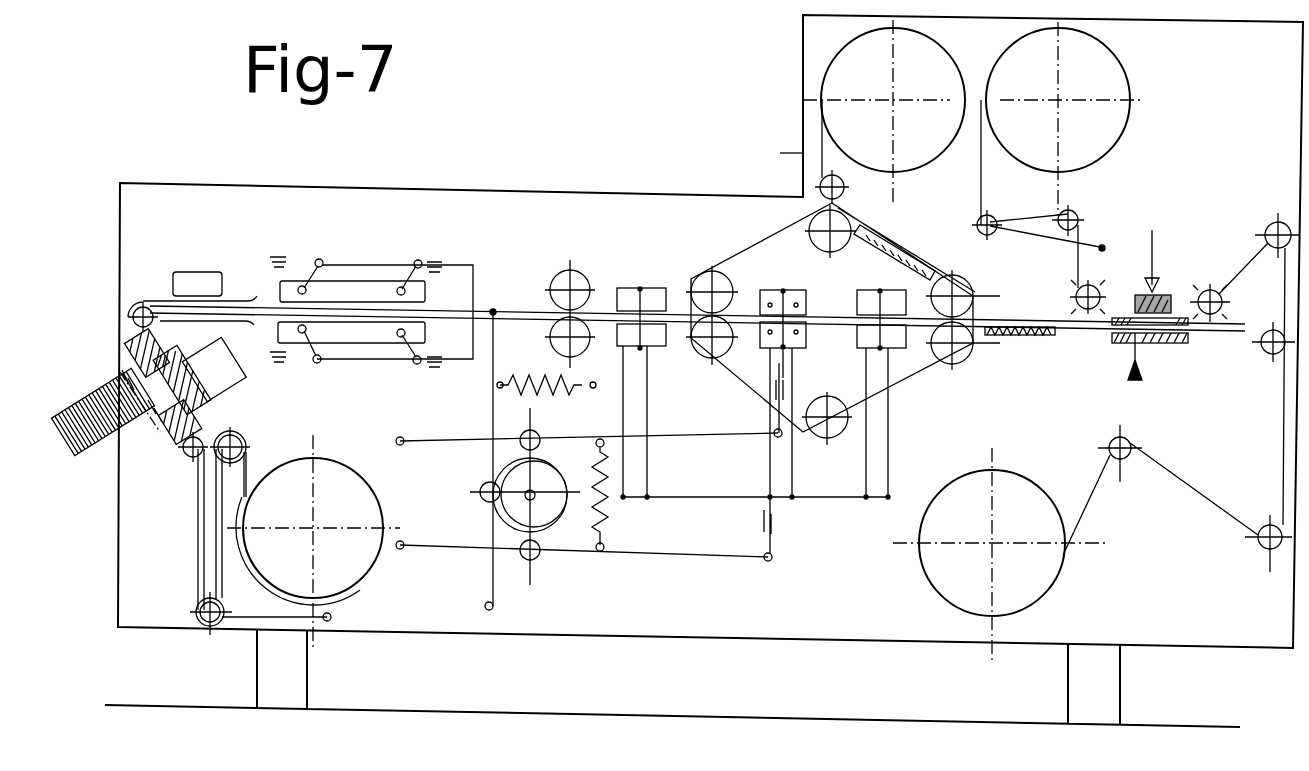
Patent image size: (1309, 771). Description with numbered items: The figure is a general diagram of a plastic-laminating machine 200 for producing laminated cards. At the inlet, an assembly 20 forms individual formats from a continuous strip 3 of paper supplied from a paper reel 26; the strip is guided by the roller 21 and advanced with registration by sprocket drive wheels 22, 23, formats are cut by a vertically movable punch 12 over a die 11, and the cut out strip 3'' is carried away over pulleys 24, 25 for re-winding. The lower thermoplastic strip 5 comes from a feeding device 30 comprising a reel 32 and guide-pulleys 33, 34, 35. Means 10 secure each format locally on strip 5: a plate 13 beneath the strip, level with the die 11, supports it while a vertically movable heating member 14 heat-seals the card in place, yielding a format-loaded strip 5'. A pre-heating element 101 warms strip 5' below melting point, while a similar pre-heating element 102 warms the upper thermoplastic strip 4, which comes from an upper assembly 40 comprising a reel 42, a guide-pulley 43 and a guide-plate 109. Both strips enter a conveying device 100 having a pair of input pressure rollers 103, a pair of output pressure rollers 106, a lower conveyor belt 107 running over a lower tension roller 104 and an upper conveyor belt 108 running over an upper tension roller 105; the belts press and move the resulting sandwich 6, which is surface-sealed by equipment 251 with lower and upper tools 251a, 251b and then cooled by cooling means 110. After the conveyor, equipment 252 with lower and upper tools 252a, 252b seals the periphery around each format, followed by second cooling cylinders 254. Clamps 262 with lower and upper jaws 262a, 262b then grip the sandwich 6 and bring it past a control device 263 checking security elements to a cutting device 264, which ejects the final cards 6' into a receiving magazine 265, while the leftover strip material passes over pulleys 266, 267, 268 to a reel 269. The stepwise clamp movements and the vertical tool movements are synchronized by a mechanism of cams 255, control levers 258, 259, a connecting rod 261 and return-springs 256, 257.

The plastic-laminating machine 200 is at (438, 655).
The sandwich 6 is at (686, 331).
The final cards 6' is at (137, 463).
The reel 42 is at (941, 46).
The paper supply roll 26 is at (1122, 62).
The upper assembly 40 is at (788, 62).
The upper thermoplastic strip 4 is at (780, 152).
The guide-pulley 43 is at (845, 190).
The upper conveyor belt 108 is at (779, 232).
The upper tension roller 105 is at (826, 240).
The output pressure rollers 106 is at (722, 286).
The lower tension roller 104 is at (833, 440).
The guide-plate 109 is at (975, 282).
The input pressure rollers 103 is at (962, 365).
The pre-heating element 102 is at (914, 231).
The conveying device 100 is at (744, 400).
The lower conveyor belt 107 is at (903, 402).
The equipment for sealing the periphery 252 is at (656, 355).
The lower tool 252a is at (662, 350).
The upper tool 252b is at (662, 288).
The cooling means 110 is at (806, 344).
The equipment for sealing the surface 251 is at (891, 374).
The lower tool 251a is at (904, 340).
The upper tool 251b is at (874, 304).
The control lever 258 is at (728, 446).
The control lever 259 is at (712, 558).
The actuating rod 261 is at (493, 420).
The return-spring 256 is at (576, 390).
The return-spring 257 is at (622, 526).
The cams 255 is at (564, 538).
The clamps 262 is at (367, 313).
The lower jaw 262a is at (351, 344).
The upper jaw 262b is at (356, 288).
The control device 263 is at (187, 280).
The second cooling cylinders 254 is at (552, 274).
The pulley 25 is at (994, 218).
The pulley 24 is at (1076, 212).
The sprocket drive wheel 23 is at (1094, 287).
The sprocket drive wheel 22 is at (1204, 288).
The roller 21 is at (1276, 222).
The guide-pulley 35 is at (1262, 356).
The continuous strip 3 is at (1231, 231).
The cut out strip 3'' is at (996, 179).
The assembly forming formats 20 is at (1173, 190).
The partial sealing means 10 is at (1143, 322).
The punch 12 is at (1130, 272).
The die 11 is at (1194, 338).
The plate 13 is at (1162, 346).
The heating member 14 is at (1130, 366).
The format-loaded strip 5' is at (1081, 352).
The pre-heating element 101 is at (1028, 340).
The reel 32 is at (1045, 590).
The guide-pulley 33 is at (1112, 440).
The guide-pulley 34 is at (1264, 554).
The lower thermoplastic strip 5 is at (1200, 472).
The feeding device 30 is at (1166, 520).
The reel 269 is at (327, 461).
The pulley 268 is at (240, 440).
The pulley 266 is at (188, 462).
The pulley 267 is at (211, 626).
The receiving magazine 265 is at (118, 400).
The cutting device 264 is at (214, 409).